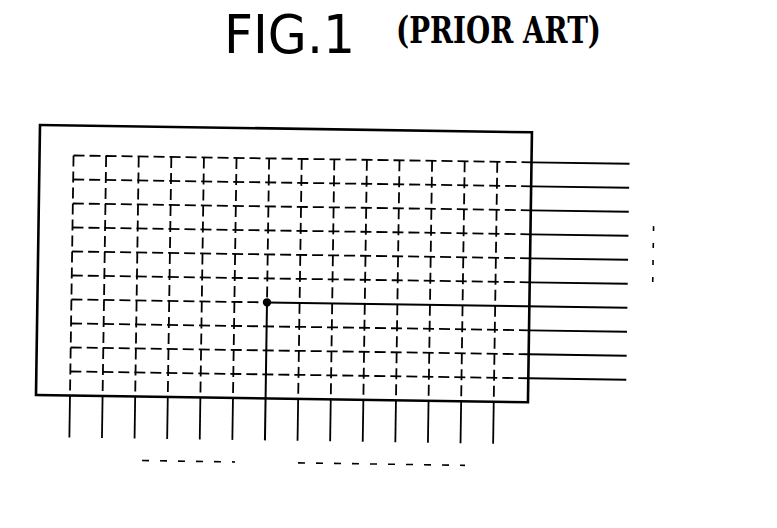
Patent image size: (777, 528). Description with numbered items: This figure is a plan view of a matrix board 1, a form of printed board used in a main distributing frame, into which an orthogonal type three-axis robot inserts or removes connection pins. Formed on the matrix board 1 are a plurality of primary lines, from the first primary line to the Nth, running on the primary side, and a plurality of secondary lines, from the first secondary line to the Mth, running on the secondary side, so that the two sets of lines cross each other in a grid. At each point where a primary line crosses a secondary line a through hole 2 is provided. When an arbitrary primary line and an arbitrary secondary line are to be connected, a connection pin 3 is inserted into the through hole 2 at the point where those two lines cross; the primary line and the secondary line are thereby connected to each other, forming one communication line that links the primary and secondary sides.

The matrix board 1 is at (488, 133).
The through hole 2 is at (236, 182).
The connection pin 3 is at (270, 306).